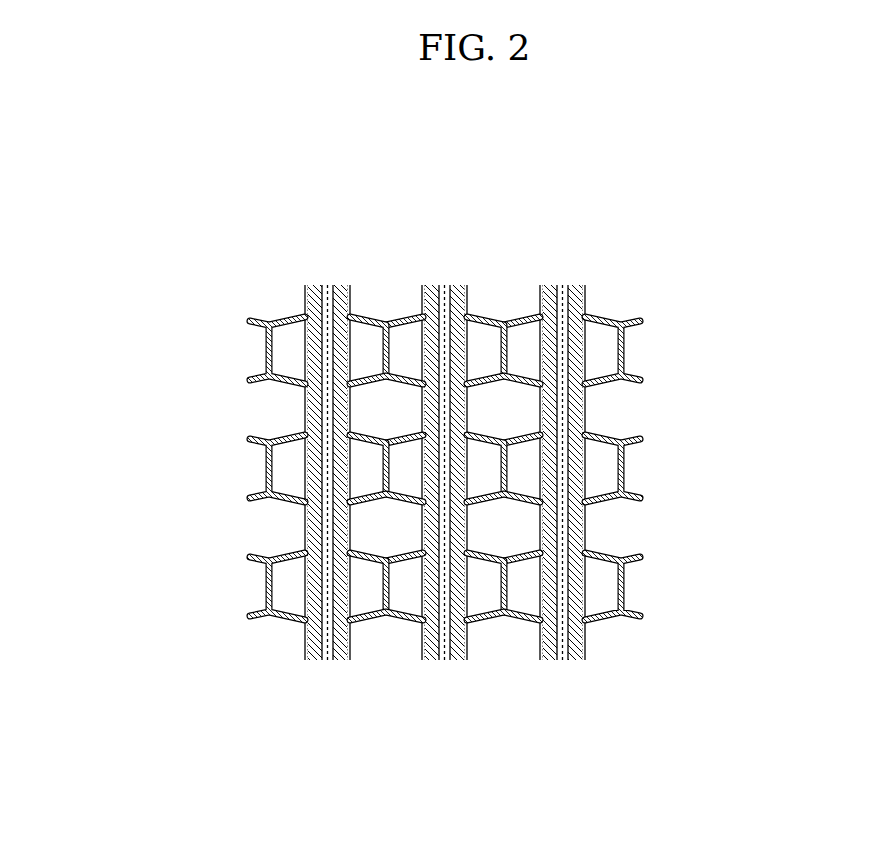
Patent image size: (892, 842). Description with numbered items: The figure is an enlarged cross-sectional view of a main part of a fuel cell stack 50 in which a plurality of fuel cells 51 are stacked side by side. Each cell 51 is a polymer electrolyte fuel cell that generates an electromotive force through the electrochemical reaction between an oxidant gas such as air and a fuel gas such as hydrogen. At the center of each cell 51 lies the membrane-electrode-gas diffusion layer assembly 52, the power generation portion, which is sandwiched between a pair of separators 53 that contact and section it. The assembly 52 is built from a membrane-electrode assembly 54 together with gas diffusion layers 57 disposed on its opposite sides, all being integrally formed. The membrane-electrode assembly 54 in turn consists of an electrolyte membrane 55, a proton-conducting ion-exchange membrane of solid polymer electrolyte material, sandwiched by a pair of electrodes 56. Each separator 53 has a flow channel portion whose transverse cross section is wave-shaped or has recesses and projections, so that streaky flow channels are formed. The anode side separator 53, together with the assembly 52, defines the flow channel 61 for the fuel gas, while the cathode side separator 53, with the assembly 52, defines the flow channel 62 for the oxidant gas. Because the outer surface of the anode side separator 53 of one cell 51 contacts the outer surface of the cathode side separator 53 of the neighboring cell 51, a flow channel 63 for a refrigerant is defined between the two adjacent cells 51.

The fuel cell stack 50 is at (218, 290).
The fuel cell 51 is at (412, 147).
The membrane-electrode-gas diffusion layer assembly 52 is at (278, 183).
The separator 53 is at (290, 316).
The membrane-electrode assembly 54 is at (362, 221).
The electrolyte membrane 55 is at (328, 288).
The electrode 56 is at (323, 288).
The gas diffusion layer 57 is at (311, 288).
The flow channel for fuel gas 61 is at (281, 363).
The flow channel for oxidant gas 62 is at (351, 363).
The flow channel for refrigerant 63 is at (376, 420).